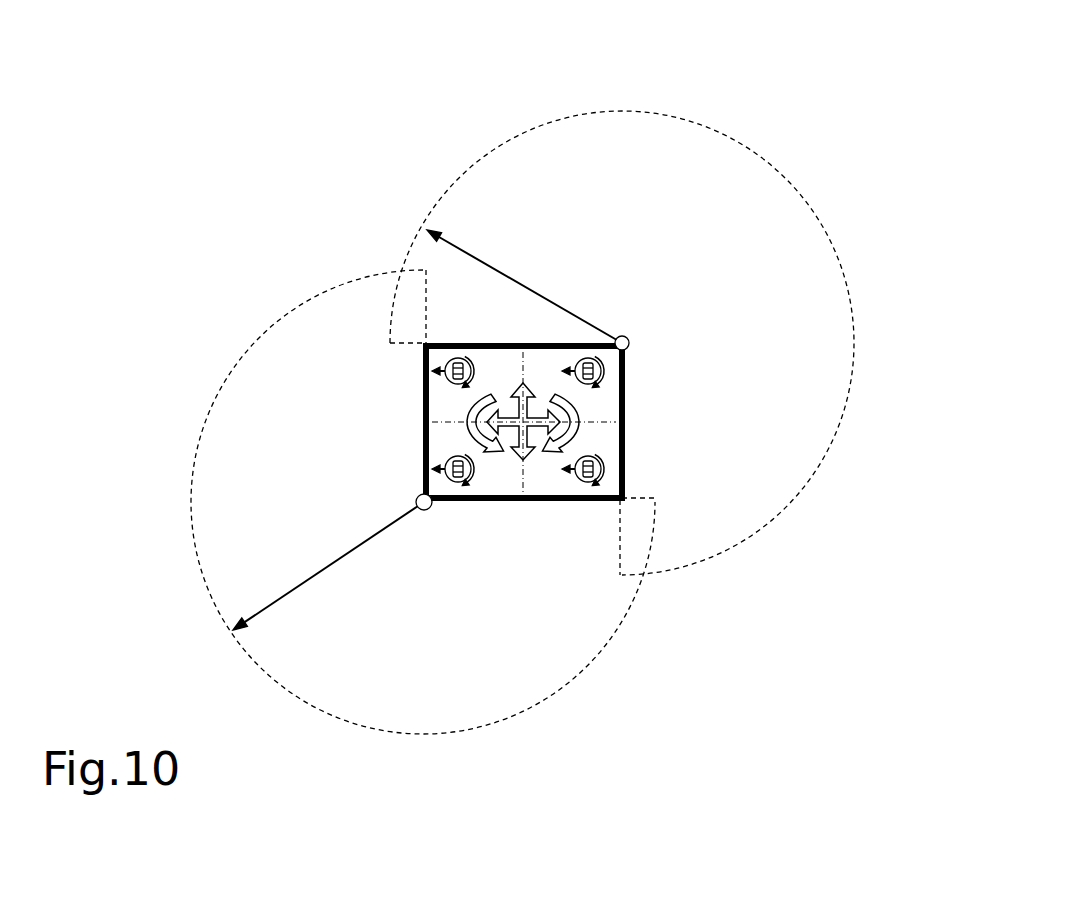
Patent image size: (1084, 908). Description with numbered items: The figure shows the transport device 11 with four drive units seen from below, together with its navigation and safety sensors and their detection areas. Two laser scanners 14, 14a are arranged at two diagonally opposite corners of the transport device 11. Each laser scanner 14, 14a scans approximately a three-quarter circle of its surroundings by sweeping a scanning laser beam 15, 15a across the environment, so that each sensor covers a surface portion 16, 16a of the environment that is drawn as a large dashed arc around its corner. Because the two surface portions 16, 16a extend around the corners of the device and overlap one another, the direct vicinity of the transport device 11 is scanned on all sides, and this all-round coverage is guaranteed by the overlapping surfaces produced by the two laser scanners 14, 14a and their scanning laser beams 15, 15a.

The transport device 11 is at (502, 373).
The laser scanner 14 is at (629, 340).
The laser scanner 14a is at (430, 508).
The scanning laser beam 15 is at (475, 252).
The scanning laser beam 15a is at (257, 608).
The surface portion 16 is at (802, 193).
The surface portion 16a is at (228, 382).